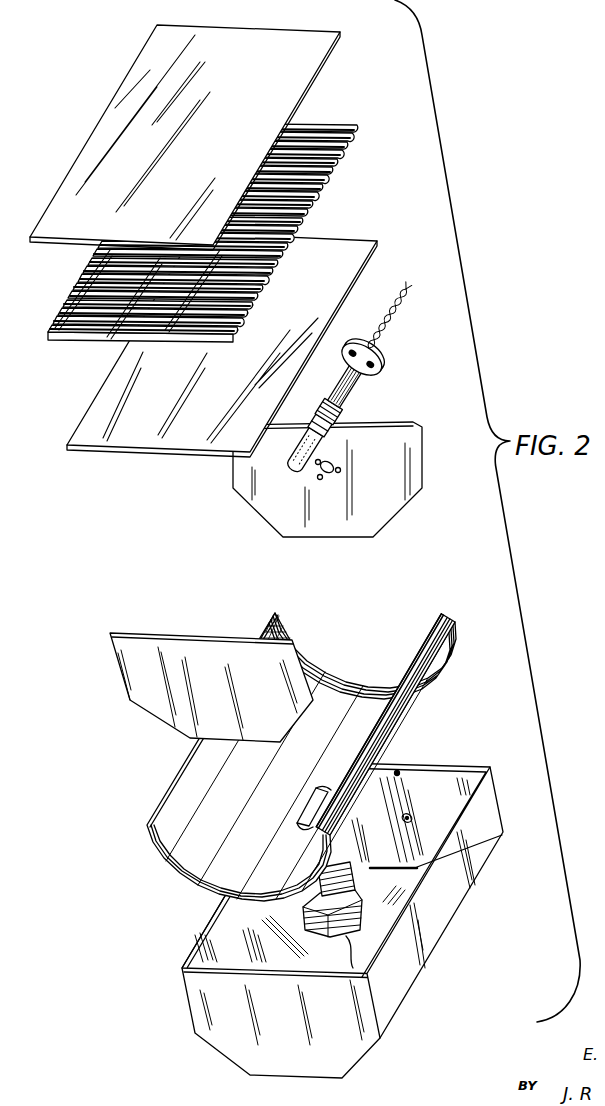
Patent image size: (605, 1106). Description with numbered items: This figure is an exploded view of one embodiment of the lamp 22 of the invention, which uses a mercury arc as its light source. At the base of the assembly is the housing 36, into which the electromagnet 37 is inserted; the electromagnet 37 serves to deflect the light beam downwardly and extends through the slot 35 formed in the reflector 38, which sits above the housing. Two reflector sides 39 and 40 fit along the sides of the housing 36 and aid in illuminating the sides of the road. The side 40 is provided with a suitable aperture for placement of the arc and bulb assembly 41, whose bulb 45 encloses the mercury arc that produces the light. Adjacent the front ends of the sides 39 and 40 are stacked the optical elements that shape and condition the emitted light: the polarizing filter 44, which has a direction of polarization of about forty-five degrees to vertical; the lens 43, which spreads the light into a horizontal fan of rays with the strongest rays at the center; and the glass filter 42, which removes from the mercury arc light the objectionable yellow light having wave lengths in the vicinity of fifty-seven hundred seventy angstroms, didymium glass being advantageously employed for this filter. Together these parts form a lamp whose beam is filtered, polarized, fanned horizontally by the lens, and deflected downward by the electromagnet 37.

The lamp 22 is at (464, 284).
The slot 35 is at (307, 812).
The housing 36 is at (189, 965).
The electromagnet 37 is at (312, 910).
The reflector 38 is at (147, 823).
The reflector side 39 is at (118, 657).
The reflector side 40 is at (239, 489).
The arc and bulb assembly 41 is at (340, 416).
The glass filter 42 is at (83, 414).
The lens 43 is at (70, 305).
The polarizing filter 44 is at (296, 85).
The bulb 45 is at (304, 476).